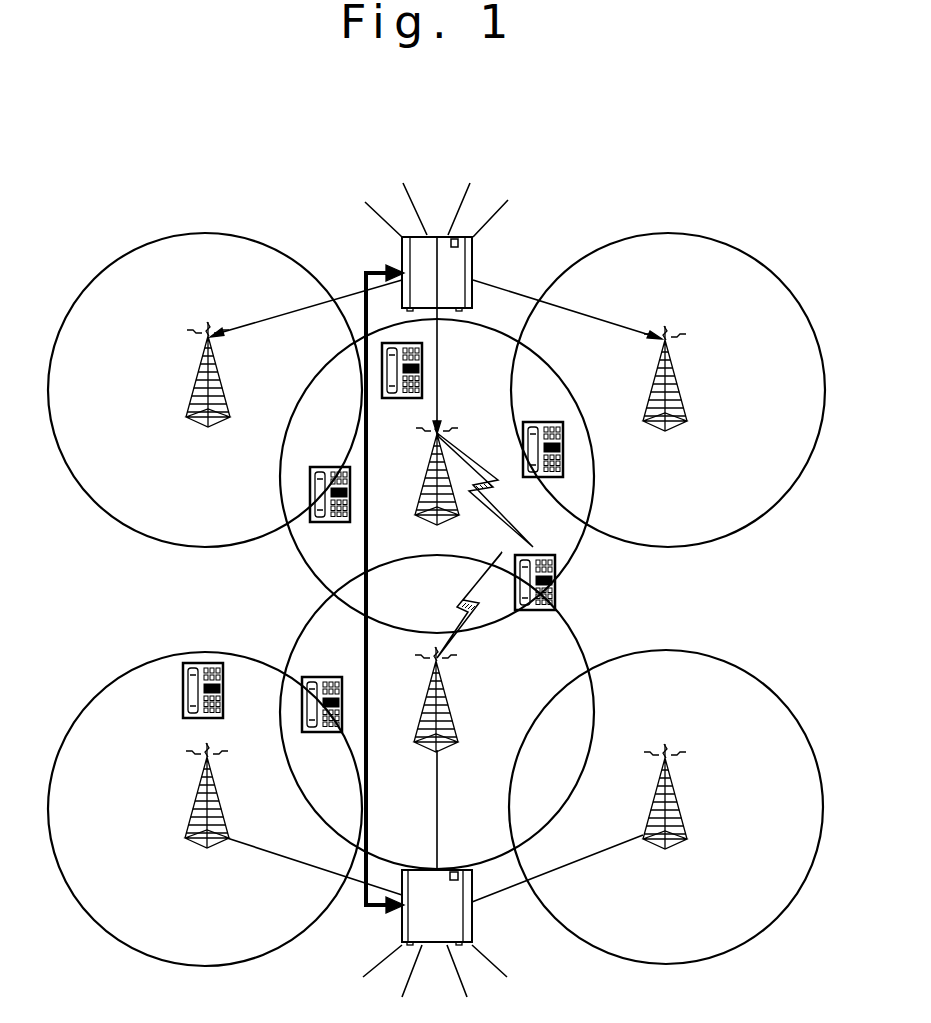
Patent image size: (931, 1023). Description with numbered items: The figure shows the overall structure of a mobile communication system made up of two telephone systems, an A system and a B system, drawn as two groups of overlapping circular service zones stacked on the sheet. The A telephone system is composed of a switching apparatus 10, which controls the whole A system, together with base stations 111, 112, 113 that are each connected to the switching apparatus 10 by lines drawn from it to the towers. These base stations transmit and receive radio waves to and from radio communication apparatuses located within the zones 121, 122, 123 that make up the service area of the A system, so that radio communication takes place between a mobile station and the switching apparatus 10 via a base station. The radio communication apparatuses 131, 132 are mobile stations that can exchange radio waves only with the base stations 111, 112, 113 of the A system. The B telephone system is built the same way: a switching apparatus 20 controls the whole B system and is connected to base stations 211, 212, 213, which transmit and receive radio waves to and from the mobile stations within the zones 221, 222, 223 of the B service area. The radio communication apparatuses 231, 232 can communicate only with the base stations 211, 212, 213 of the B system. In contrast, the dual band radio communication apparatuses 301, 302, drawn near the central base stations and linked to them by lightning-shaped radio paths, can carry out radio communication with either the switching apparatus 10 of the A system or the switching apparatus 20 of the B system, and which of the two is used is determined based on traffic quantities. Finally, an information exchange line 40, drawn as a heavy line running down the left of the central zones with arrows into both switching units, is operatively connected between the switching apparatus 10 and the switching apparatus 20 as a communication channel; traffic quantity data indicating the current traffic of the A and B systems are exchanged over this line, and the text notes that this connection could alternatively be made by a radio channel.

The switching apparatus 10 is at (465, 262).
The switching apparatus 20 is at (463, 918).
The information exchange line 40 is at (365, 647).
The base station 111 is at (197, 423).
The base station 112 is at (453, 432).
The base station 113 is at (653, 425).
The zone 121 is at (150, 538).
The zone 122 is at (293, 557).
The zone 123 is at (762, 517).
The radio communication apparatus 131 is at (331, 467).
The radio communication apparatus 132 is at (543, 477).
The base station 211 is at (197, 842).
The base station 212 is at (448, 702).
The base station 213 is at (648, 845).
The zone 221 is at (153, 957).
The zone 222 is at (583, 650).
The zone 223 is at (758, 678).
The radio communication apparatus 231 is at (183, 697).
The radio communication apparatus 232 is at (323, 732).
The dual band radio communication apparatus 301 is at (553, 590).
The dual band radio communication apparatus 302 is at (397, 398).